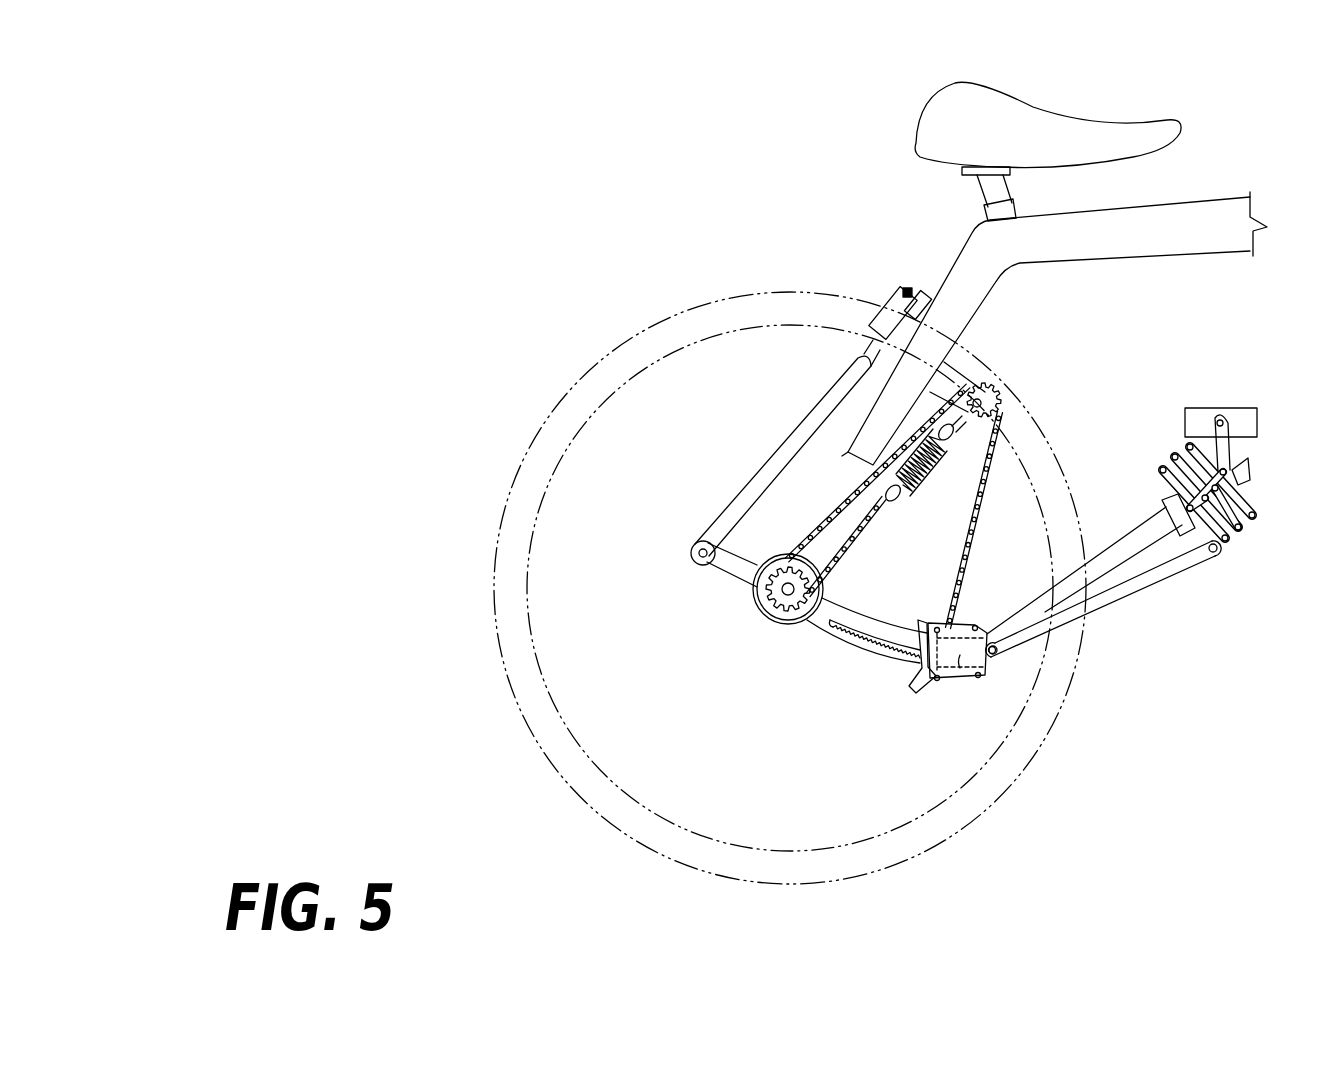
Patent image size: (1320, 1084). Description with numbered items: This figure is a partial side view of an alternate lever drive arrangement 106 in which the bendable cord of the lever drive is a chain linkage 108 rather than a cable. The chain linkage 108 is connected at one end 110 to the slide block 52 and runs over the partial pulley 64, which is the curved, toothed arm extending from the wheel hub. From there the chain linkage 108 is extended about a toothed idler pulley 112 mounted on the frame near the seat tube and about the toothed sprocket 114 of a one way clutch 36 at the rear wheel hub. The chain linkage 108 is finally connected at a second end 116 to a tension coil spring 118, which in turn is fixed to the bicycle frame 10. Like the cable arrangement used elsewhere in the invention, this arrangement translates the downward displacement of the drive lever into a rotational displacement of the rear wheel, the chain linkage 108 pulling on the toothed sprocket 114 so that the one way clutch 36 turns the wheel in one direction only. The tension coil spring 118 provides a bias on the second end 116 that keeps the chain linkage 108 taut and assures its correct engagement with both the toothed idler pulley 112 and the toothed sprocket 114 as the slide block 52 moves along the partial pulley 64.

The bicycle frame 10 is at (1207, 219).
The one way clutch 36 is at (757, 597).
The slide block 52 is at (957, 683).
The partial pulley 64 is at (917, 668).
The lever drive arrangement 106 is at (1119, 628).
The chain linkage 108 is at (997, 474).
The end 110 is at (927, 681).
The toothed idler pulley 112 is at (1002, 389).
The toothed sprocket 114 is at (788, 613).
The second end 116 is at (880, 492).
The tension coil spring 118 is at (930, 483).